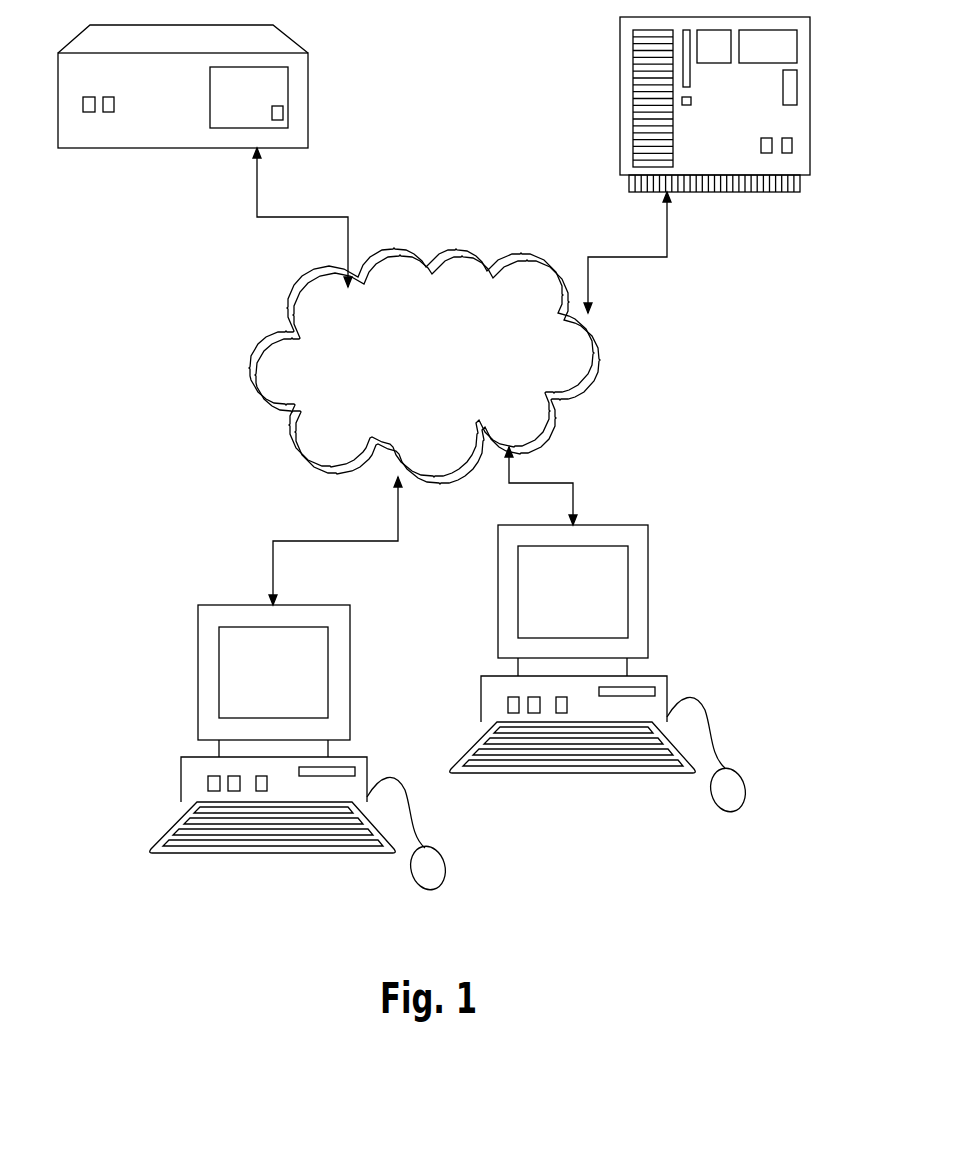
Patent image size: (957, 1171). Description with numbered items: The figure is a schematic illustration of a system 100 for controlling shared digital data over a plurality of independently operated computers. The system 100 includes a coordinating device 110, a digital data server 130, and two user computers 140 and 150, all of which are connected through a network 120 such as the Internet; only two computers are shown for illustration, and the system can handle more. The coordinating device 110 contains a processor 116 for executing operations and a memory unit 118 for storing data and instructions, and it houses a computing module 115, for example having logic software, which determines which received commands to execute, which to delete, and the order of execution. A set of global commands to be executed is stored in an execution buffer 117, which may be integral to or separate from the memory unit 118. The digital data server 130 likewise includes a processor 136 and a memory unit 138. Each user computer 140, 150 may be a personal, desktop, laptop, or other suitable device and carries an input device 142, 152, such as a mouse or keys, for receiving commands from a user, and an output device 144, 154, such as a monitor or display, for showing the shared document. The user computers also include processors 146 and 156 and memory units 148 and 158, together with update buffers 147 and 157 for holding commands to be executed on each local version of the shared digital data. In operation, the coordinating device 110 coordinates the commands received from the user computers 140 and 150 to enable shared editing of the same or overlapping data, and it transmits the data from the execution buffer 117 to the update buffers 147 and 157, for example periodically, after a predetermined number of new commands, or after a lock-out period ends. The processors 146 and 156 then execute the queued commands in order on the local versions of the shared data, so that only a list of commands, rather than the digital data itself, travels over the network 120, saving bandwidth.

The system 100 is at (667, 870).
The coordinating device 110 is at (223, 111).
The computing module 115 is at (261, 102).
The processor 116 is at (89, 112).
The execution buffer 117 is at (278, 120).
The memory unit 118 is at (108, 96).
The network 120 is at (433, 391).
The digital data server 130 is at (747, 139).
The processor 136 is at (766, 153).
The memory unit 138 is at (787, 138).
The user computer 140 is at (303, 721).
The input device 142 is at (437, 852).
The output device 144 is at (305, 669).
The processor 146 is at (208, 783).
The update buffer 147 is at (261, 791).
The memory unit 148 is at (228, 776).
The user computer 150 is at (603, 642).
The input device 152 is at (738, 770).
The output device 154 is at (605, 589).
The processor 156 is at (508, 706).
The update buffer 157 is at (561, 713).
The memory unit 158 is at (514, 695).